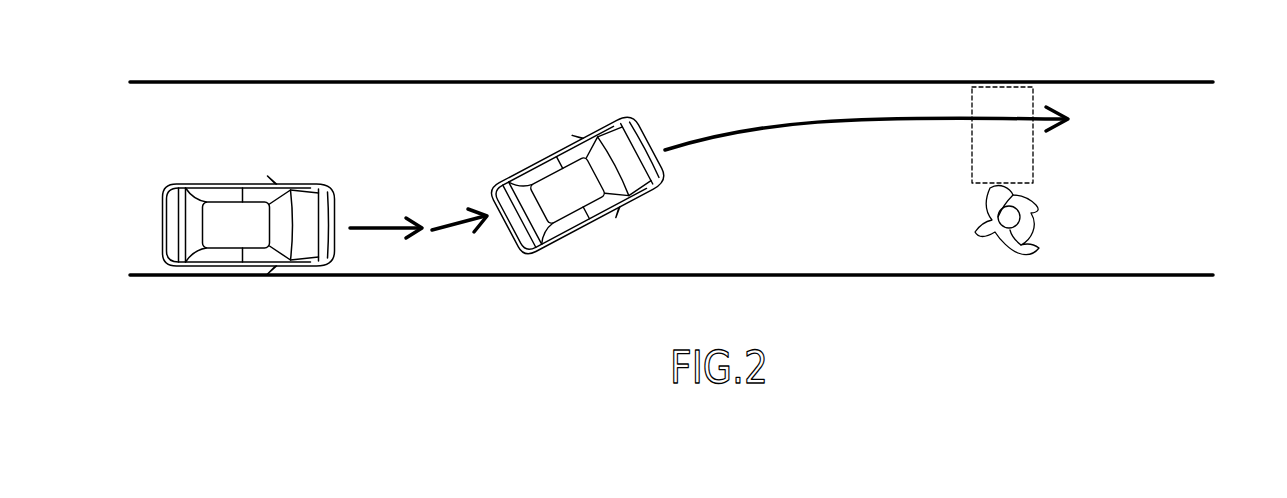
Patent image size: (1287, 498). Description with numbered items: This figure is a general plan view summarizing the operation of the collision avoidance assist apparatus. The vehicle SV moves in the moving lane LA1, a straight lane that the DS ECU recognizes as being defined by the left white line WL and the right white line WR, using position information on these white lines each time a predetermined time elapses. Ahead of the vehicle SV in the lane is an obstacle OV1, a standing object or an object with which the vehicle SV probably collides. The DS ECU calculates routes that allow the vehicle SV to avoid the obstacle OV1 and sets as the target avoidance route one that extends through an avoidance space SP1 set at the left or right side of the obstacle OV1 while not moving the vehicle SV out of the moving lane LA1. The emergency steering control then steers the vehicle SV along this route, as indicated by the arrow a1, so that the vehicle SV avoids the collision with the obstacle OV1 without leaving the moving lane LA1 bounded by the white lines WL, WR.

The vehicle SV is at (227, 185).
The arrow a1 is at (444, 224).
The left white line WL is at (852, 78).
The right white line WR is at (868, 280).
The moving lane LA1 is at (703, 179).
The avoidance space SP1 is at (1034, 160).
The obstacle OV1 is at (993, 212).